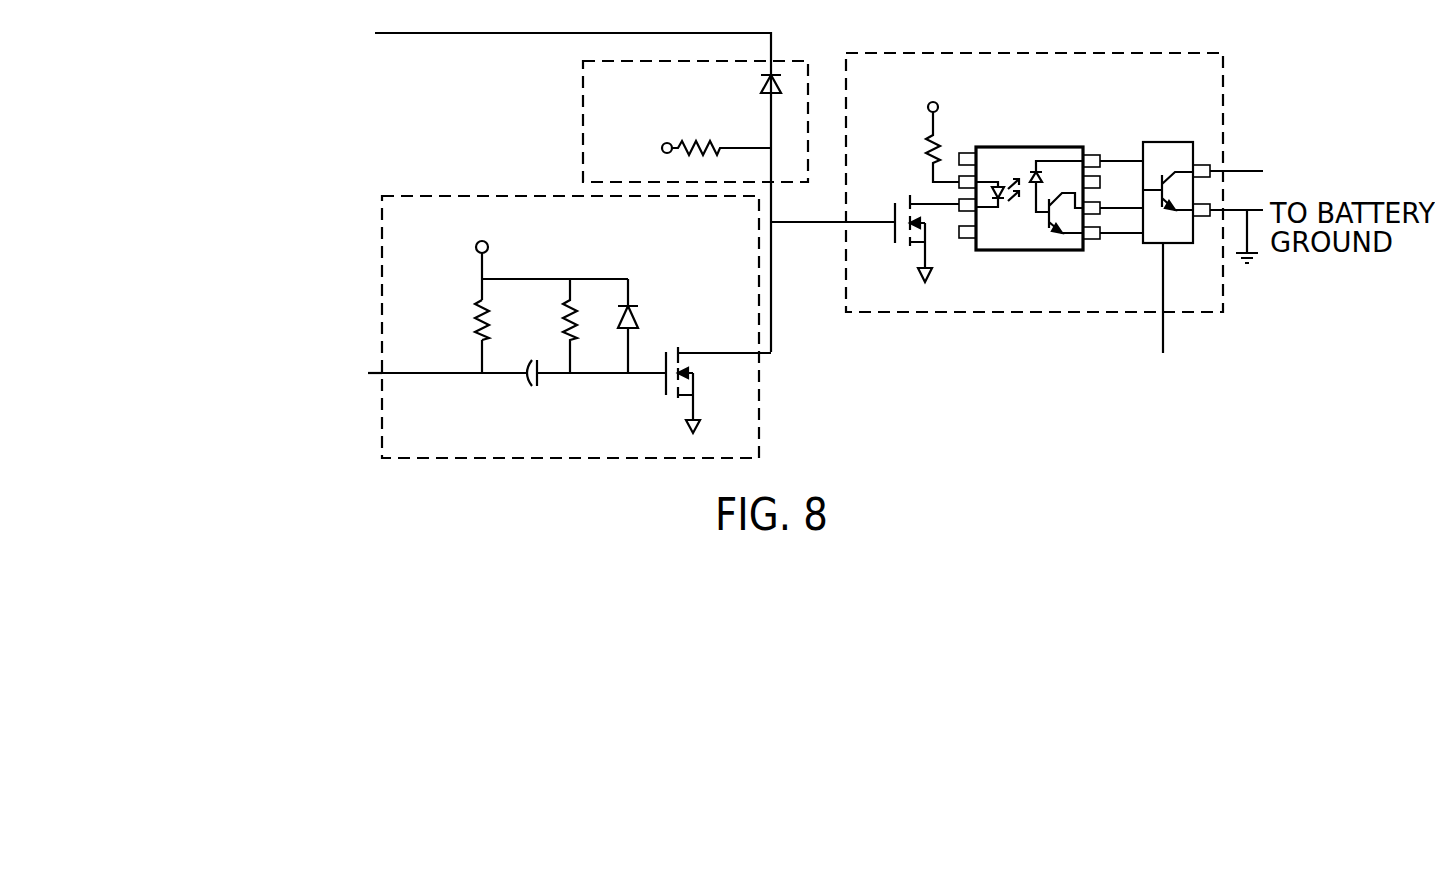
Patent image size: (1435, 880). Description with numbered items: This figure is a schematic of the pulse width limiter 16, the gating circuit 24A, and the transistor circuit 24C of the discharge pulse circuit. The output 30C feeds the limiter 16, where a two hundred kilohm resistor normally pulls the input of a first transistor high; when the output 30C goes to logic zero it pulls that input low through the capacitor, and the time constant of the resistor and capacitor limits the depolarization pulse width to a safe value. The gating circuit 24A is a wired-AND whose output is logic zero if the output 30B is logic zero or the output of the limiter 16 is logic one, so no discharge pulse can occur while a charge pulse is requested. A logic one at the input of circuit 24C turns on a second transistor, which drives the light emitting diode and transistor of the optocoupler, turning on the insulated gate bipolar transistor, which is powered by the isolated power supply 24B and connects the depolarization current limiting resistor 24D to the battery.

The pulse width limiter 16 is at (455, 190).
The gating circuit 24A is at (578, 95).
The insulated gate bipolar transistor 24C is at (1033, 45).
The output 30B is at (482, 177).
The output 30C is at (284, 367).
The isolated power supply 24B is at (1161, 331).
The depolarization current limiting resistor 24D is at (1289, 170).